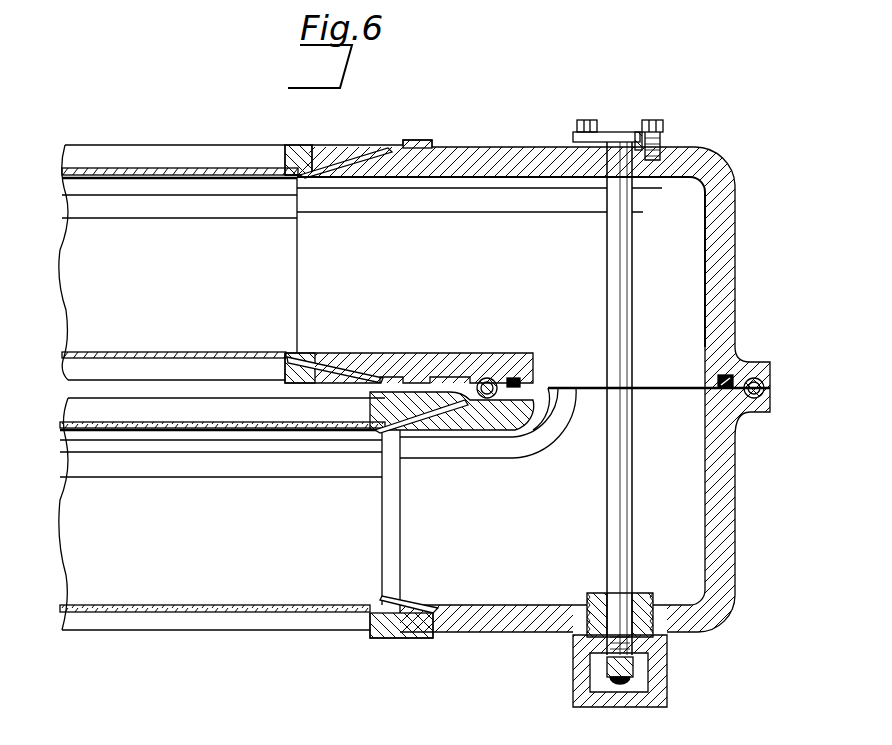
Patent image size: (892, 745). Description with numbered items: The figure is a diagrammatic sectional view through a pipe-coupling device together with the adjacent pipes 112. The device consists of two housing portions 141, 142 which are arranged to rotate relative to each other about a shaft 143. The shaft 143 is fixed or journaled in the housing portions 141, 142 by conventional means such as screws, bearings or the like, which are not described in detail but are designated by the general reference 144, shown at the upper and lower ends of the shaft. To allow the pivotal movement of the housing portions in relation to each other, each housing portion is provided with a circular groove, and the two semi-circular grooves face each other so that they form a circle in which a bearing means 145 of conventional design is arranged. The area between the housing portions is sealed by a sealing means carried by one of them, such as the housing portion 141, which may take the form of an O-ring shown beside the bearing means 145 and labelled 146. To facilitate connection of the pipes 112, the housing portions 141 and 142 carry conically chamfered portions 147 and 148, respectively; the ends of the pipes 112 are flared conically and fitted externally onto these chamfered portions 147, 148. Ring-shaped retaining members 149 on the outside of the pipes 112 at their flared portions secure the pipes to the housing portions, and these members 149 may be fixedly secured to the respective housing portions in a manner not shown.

The pipe 112 is at (128, 172).
The housing portion 141 is at (473, 162).
The housing portion 142 is at (511, 622).
The shaft 143 is at (627, 498).
The fixing devices 144 is at (598, 128).
The bearing means 145 is at (754, 398).
The seal 146 is at (731, 376).
The conically chamfered portion 147 is at (374, 166).
The conically chamfered portion 148 is at (438, 617).
The ring-shaped retaining member 149 is at (298, 148).